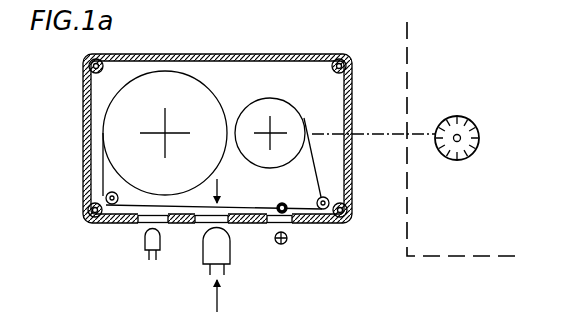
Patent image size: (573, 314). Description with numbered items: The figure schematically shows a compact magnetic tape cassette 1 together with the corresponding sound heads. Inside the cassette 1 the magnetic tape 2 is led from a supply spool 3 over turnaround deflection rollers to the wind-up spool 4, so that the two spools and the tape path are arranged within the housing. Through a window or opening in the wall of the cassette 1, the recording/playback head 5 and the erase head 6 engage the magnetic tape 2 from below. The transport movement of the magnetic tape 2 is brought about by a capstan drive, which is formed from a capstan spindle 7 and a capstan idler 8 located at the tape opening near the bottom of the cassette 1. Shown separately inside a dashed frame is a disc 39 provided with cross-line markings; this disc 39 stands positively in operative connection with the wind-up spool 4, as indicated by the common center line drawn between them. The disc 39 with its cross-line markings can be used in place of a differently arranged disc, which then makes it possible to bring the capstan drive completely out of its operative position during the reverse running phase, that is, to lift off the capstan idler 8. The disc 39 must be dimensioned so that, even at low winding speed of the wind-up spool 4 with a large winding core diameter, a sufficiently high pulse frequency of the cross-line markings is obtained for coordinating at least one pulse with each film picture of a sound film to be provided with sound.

The magnetic tape cassette 1 is at (276, 55).
The magnetic tape 2 is at (101, 181).
The supply spool 3 is at (115, 118).
The wind-up spool 4 is at (296, 117).
The recording/playback head 5 is at (204, 251).
The erase head 6 is at (145, 244).
The capstan spindle 7 is at (280, 213).
The capstan idler 8 is at (288, 243).
The disc with cross-line markings 39 is at (470, 126).